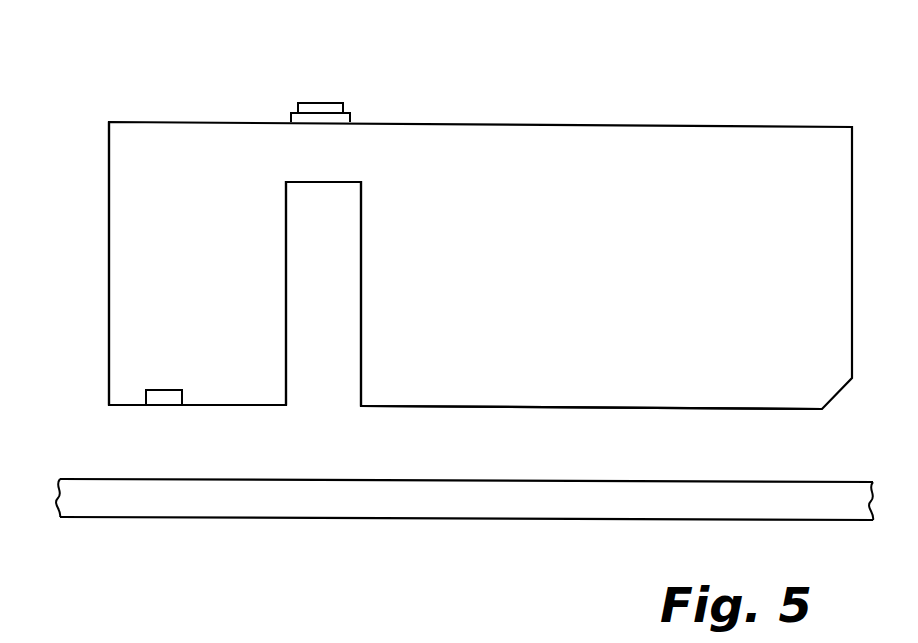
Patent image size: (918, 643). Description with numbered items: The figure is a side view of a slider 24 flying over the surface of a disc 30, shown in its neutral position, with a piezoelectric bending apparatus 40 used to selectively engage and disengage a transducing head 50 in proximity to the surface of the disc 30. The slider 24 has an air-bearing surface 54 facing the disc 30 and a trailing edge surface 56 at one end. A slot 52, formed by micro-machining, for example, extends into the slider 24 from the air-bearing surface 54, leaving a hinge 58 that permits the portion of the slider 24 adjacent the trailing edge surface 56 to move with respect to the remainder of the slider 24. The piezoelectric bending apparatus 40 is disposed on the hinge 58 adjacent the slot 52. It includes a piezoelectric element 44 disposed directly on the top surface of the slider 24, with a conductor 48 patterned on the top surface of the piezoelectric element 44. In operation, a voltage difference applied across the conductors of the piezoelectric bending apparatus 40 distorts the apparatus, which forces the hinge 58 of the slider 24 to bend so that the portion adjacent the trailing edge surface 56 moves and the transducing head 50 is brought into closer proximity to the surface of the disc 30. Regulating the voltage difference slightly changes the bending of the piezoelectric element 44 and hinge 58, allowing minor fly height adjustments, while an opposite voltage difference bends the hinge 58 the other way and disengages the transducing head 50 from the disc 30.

The slider 24 is at (733, 127).
The disc 30 is at (595, 519).
The piezoelectric bending apparatus 40 is at (293, 119).
The piezoelectric element 44 is at (352, 118).
The conductor 48 is at (338, 103).
The transducing head 50 is at (163, 405).
The slot 52 is at (322, 330).
The air-bearing surface 54 is at (447, 407).
The trailing edge surface 56 is at (109, 210).
The hinge 58 is at (305, 183).